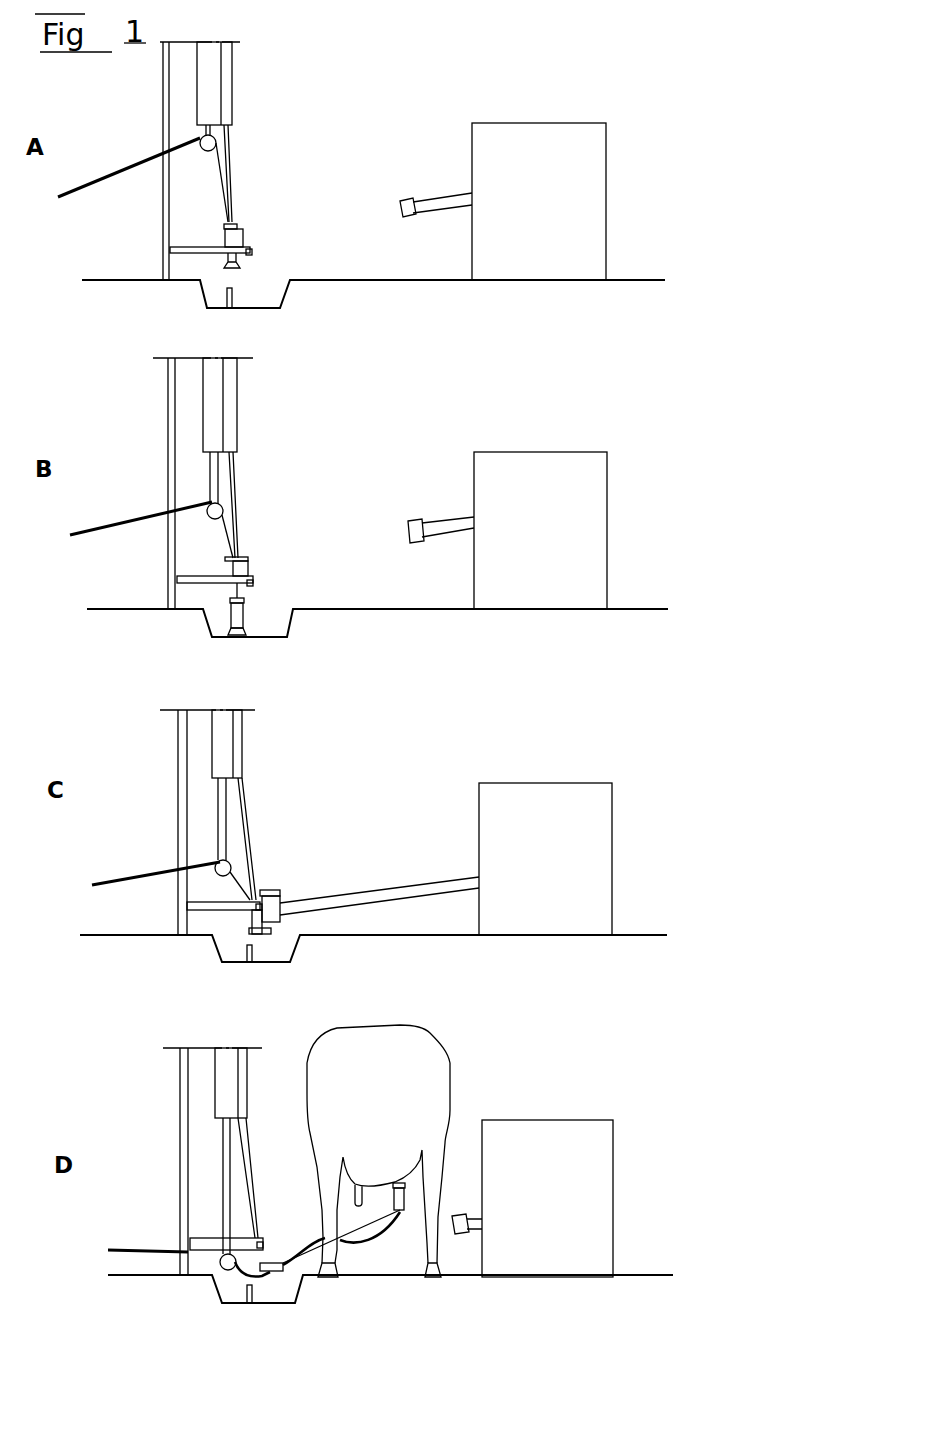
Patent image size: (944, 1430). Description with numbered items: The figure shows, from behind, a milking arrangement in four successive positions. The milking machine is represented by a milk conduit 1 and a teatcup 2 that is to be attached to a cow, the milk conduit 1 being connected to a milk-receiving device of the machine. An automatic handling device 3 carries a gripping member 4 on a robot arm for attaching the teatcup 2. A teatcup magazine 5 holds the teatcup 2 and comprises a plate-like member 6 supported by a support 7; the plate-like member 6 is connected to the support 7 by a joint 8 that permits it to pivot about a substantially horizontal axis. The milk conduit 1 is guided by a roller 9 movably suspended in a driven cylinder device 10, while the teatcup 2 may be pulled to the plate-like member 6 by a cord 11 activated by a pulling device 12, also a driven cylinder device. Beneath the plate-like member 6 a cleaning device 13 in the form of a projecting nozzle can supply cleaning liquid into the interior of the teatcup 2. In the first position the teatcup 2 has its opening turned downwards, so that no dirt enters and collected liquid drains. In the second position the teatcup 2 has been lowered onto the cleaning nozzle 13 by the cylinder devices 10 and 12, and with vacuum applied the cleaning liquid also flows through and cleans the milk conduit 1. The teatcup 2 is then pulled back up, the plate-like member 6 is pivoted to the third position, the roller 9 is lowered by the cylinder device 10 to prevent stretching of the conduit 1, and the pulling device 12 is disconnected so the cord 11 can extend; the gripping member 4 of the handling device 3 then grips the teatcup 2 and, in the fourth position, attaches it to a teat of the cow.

In FIG. 1A, the milk conduit 1 is at (66, 192).
In FIG. 1B, the milk conduit 1 is at (80, 528).
In FIG. 1C, the milk conduit 1 is at (103, 880).
In FIG. 1D, the milk conduit 1 is at (120, 1247).
In FIG. 1A, the teatcup 2 is at (226, 237).
In FIG. 1B, the teatcup 2 is at (245, 617).
In FIG. 1C, the teatcup 2 is at (270, 890).
In FIG. 1D, the teatcup 2 is at (403, 1223).
In FIG. 1A, the automatic handling device 3 is at (498, 132).
In FIG. 1B, the automatic handling device 3 is at (512, 458).
In FIG. 1C, the automatic handling device 3 is at (510, 790).
In FIG. 1D, the automatic handling device 3 is at (535, 1120).
In FIG. 1A, the gripping member 4 is at (412, 199).
In FIG. 1B, the gripping member 4 is at (420, 517).
In FIG. 1C, the gripping member 4 is at (280, 913).
In FIG. 1D, the gripping member 4 is at (453, 1213).
In FIG. 1A, the teatcup magazine 5 is at (286, 208).
In FIG. 1B, the teatcup magazine 5 is at (273, 561).
In FIG. 1C, the teatcup magazine 5 is at (291, 939).
In FIG. 1D, the teatcup magazine 5 is at (271, 1231).
In FIG. 1A, the plate-like member 6 is at (246, 228).
In FIG. 1B, the plate-like member 6 is at (250, 568).
In FIG. 1C, the plate-like member 6 is at (250, 923).
In FIG. 1D, the plate-like member 6 is at (273, 1272).
In FIG. 1A, the support 7 is at (200, 252).
In FIG. 1B, the support 7 is at (217, 580).
In FIG. 1C, the support 7 is at (210, 905).
In FIG. 1D, the support 7 is at (210, 1243).
In FIG. 1A, the joint 8 is at (250, 252).
In FIG. 1B, the joint 8 is at (253, 582).
In FIG. 1C, the joint 8 is at (257, 907).
In FIG. 1D, the joint 8 is at (265, 1245).
In FIG. 1A, the roller 9 is at (213, 151).
In FIG. 1B, the roller 9 is at (217, 518).
In FIG. 1C, the roller 9 is at (218, 858).
In FIG. 1D, the roller 9 is at (222, 1247).
In FIG. 1A, the cylinder device 10 is at (208, 92).
In FIG. 1B, the cylinder device 10 is at (212, 408).
In FIG. 1C, the cylinder device 10 is at (215, 742).
In FIG. 1D, the cylinder device 10 is at (225, 1080).
In FIG. 1A, the cord 11 is at (227, 143).
In FIG. 1B, the cord 11 is at (233, 470).
In FIG. 1C, the cord 11 is at (242, 807).
In FIG. 1D, the cord 11 is at (247, 1145).
In FIG. 1A, the pulling device 12 is at (225, 78).
In FIG. 1B, the pulling device 12 is at (230, 385).
In FIG. 1C, the pulling device 12 is at (238, 733).
In FIG. 1D, the pulling device 12 is at (242, 1065).
In FIG. 1A, the cleaning device 13 is at (233, 290).
In FIG. 1C, the cleaning device 13 is at (252, 957).
In FIG. 1D, the cleaning device 13 is at (223, 1298).